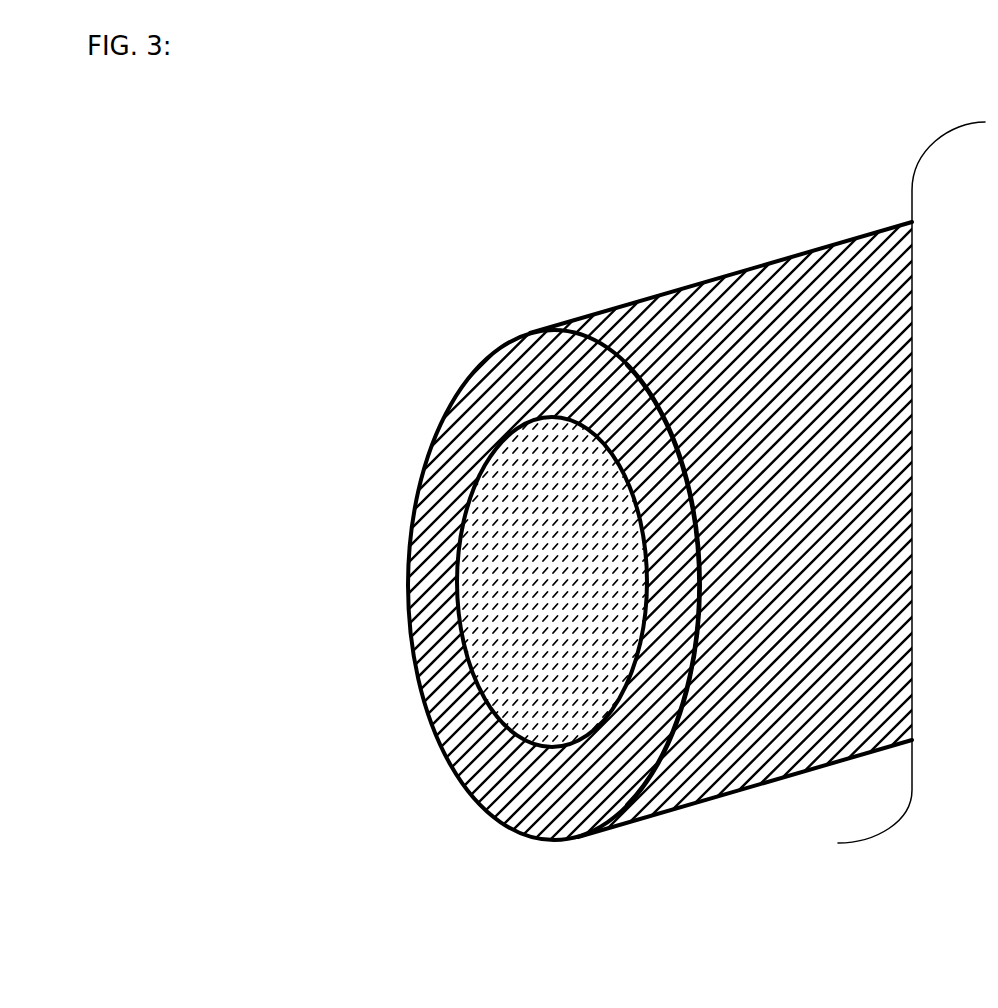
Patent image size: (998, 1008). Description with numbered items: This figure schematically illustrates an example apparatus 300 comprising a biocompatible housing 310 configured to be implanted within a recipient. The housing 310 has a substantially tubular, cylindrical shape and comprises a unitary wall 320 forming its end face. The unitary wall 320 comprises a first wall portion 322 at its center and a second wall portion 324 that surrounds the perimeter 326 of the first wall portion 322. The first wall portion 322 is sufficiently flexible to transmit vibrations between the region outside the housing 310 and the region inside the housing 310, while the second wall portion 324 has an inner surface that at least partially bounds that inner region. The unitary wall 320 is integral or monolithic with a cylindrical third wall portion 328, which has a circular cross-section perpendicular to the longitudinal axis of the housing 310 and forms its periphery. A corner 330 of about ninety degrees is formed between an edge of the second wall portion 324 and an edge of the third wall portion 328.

The apparatus 300 is at (606, 120).
The biocompatible housing 310 is at (623, 258).
The unitary wall 320 is at (418, 392).
The first wall portion 322 is at (513, 660).
The second wall portion 324 is at (428, 558).
The perimeter 326 is at (492, 715).
The third wall portion 328 is at (675, 777).
The corner 330 is at (680, 712).